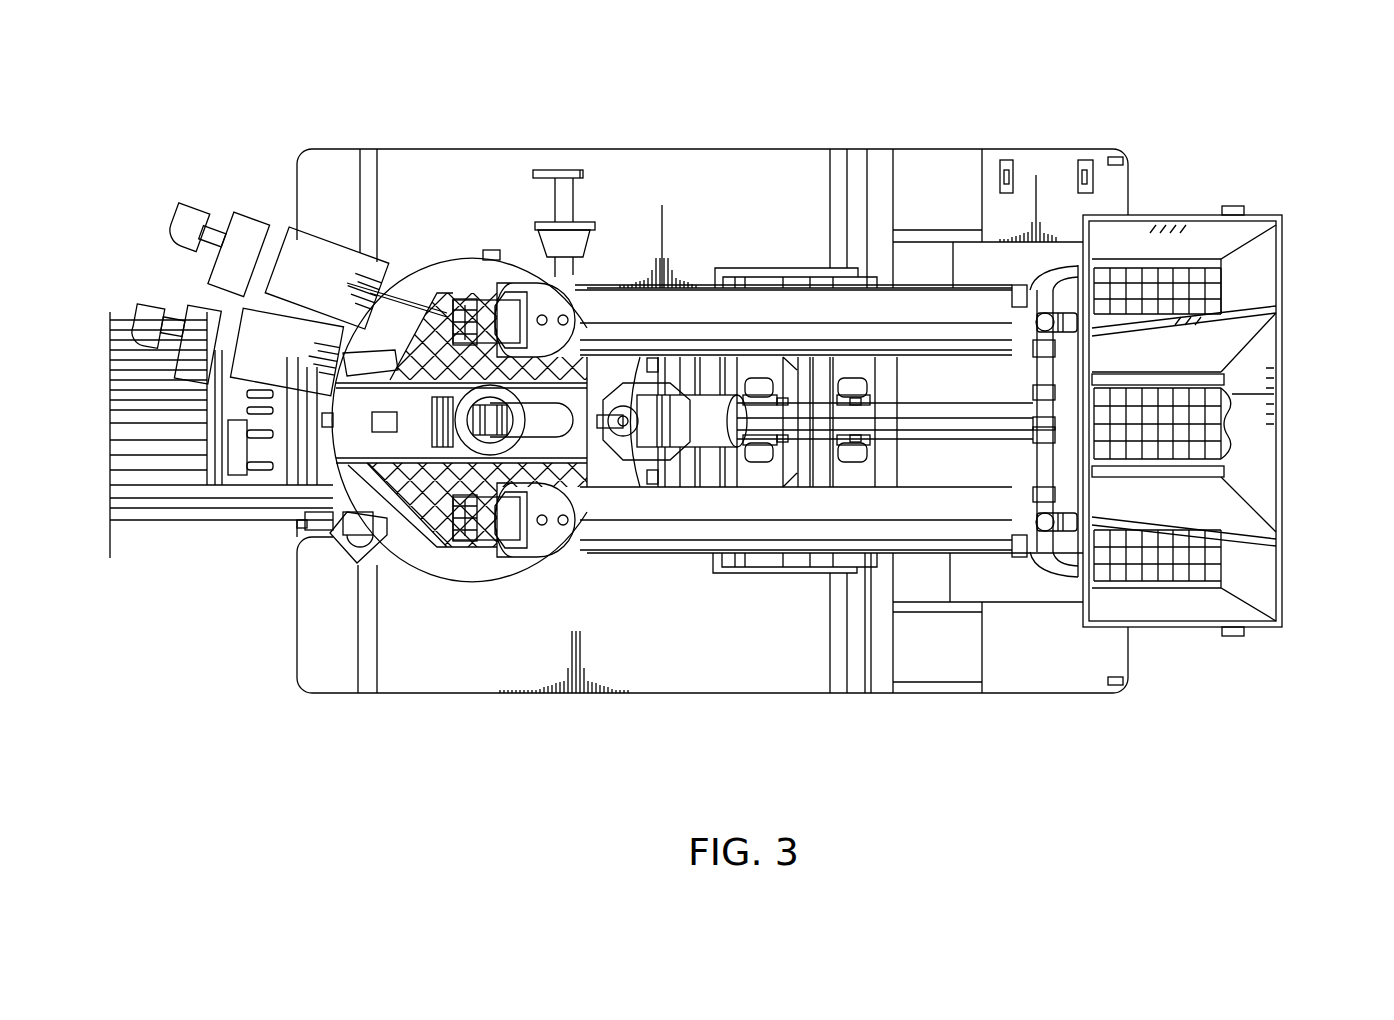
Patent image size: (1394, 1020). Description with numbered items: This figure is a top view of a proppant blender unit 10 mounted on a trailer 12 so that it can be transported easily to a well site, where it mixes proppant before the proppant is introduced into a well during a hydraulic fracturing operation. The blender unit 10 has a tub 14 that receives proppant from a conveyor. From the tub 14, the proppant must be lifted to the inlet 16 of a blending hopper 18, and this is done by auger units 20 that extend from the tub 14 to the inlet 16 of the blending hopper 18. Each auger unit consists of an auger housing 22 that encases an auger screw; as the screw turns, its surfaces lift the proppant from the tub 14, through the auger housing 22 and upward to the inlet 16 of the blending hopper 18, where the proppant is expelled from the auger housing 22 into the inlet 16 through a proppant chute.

The proppant blender unit 10 is at (697, 210).
The trailer 12 is at (762, 678).
The tub 14 is at (1299, 252).
The inlet 16 is at (425, 520).
The blending hopper 18 is at (487, 583).
The auger units 20 is at (759, 272).
The auger housing 22 is at (940, 300).